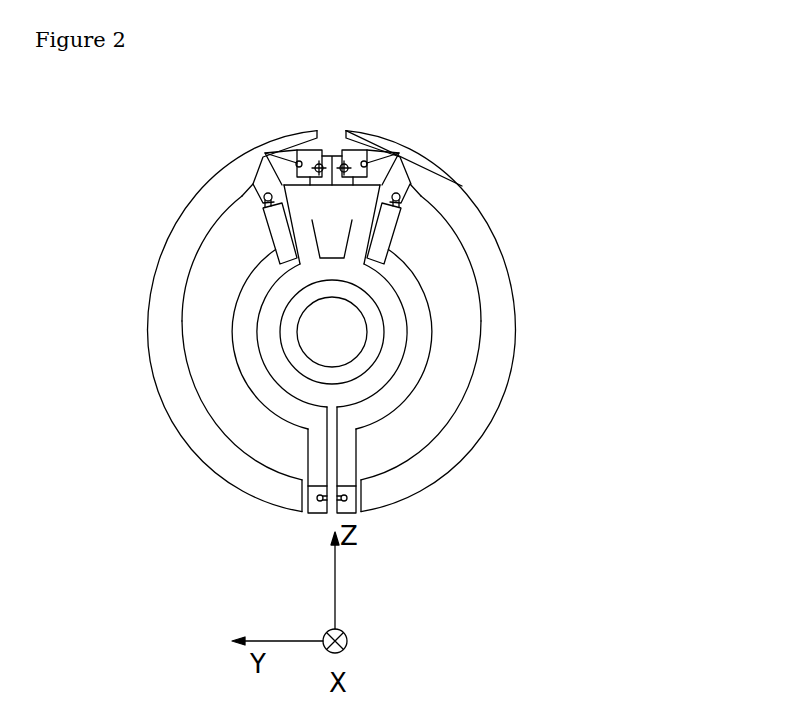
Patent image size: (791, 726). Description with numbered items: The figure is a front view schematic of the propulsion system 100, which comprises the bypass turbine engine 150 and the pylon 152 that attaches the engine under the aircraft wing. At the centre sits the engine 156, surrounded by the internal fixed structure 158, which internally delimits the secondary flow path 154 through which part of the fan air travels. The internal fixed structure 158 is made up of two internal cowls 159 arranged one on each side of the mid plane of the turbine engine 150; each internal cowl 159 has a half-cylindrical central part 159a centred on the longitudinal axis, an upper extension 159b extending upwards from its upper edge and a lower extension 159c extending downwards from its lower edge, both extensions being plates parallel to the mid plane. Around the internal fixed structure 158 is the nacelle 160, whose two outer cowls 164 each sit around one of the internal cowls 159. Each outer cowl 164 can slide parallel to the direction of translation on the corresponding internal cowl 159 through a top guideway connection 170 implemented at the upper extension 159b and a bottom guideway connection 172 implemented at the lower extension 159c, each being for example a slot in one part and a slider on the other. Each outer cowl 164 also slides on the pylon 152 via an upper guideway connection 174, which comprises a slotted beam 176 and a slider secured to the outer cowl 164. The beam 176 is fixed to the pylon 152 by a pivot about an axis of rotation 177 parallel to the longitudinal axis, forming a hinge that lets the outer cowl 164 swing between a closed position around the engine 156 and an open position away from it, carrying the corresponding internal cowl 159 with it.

The propulsion system 100 is at (133, 541).
The bypass turbine engine 150 is at (558, 135).
The pylon 152 is at (313, 213).
The secondary flow path 154 is at (415, 432).
The engine 156 is at (372, 356).
The internal fixed structure 158 is at (528, 312).
The internal cowl 159 is at (420, 345).
The central part 159a is at (243, 345).
The upper extension 159b is at (274, 243).
The lower extension 159c is at (318, 463).
The nacelle 160 is at (476, 508).
The outer cowl 164 is at (492, 272).
The top guideway connection 170 is at (397, 194).
The bottom guideway connection 172 is at (360, 502).
The upper guideway connection 174 is at (366, 162).
The beam 176 is at (317, 131).
The axis of rotation 177 is at (325, 151).